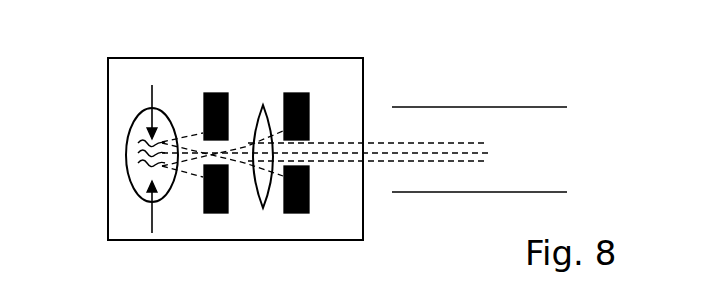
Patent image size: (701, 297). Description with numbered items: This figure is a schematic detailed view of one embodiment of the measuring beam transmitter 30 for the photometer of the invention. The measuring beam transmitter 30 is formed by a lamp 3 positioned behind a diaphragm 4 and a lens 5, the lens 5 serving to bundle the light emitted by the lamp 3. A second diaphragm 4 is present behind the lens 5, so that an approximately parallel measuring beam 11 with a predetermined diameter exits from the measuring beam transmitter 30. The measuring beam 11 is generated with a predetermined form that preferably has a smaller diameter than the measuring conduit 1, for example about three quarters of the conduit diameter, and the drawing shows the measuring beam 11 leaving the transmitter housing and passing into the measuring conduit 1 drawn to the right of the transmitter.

The measuring beam transmitter 30 is at (175, 70).
The lamp 3 is at (135, 168).
The diaphragm 4 is at (215, 92).
The lens 5 is at (267, 105).
The measuring beam 11 is at (413, 142).
The measuring conduit 1 is at (494, 120).